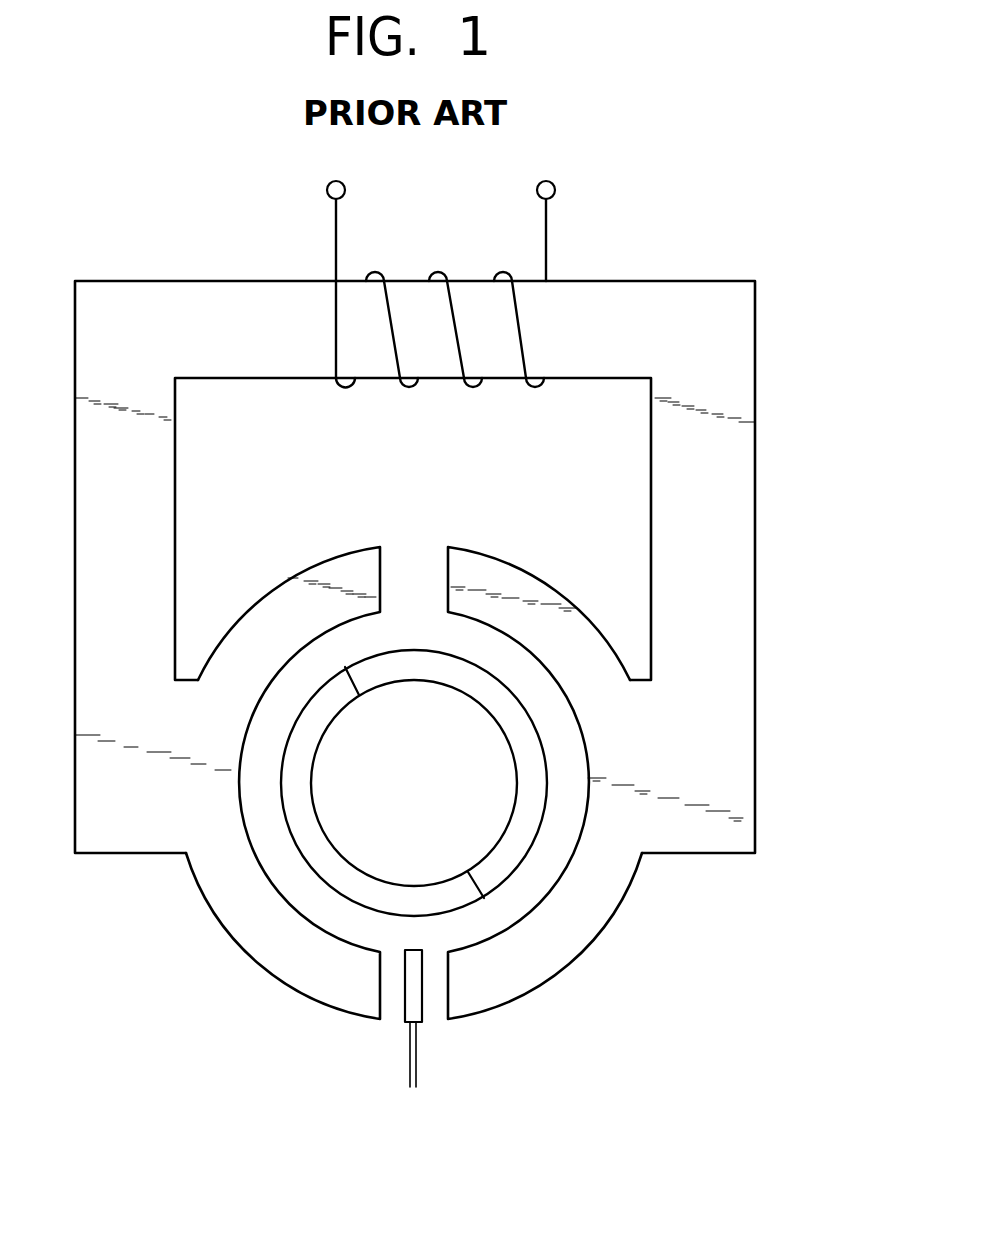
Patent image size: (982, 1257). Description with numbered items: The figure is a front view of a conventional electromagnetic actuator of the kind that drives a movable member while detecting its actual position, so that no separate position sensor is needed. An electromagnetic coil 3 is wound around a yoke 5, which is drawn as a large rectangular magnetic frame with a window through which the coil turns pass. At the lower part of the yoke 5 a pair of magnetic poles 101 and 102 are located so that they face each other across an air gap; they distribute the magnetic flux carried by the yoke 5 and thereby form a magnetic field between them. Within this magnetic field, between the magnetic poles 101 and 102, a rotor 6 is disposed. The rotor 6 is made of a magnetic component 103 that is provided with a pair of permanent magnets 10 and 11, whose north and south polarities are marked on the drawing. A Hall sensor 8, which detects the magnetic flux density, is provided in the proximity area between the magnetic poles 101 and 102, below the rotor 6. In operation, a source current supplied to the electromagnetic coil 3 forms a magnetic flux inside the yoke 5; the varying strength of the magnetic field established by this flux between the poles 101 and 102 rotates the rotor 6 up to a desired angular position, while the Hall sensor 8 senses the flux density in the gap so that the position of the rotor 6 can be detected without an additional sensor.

The electromagnetic coil 3 is at (547, 223).
The yoke 5 is at (738, 467).
The rotor 6 is at (517, 832).
The Hall sensor 8 is at (416, 1073).
The permanent magnet 10 is at (337, 865).
The permanent magnet 11 is at (523, 865).
The magnetic pole 101 is at (225, 892).
The magnetic pole 102 is at (498, 988).
The magnetic component 103 is at (468, 843).